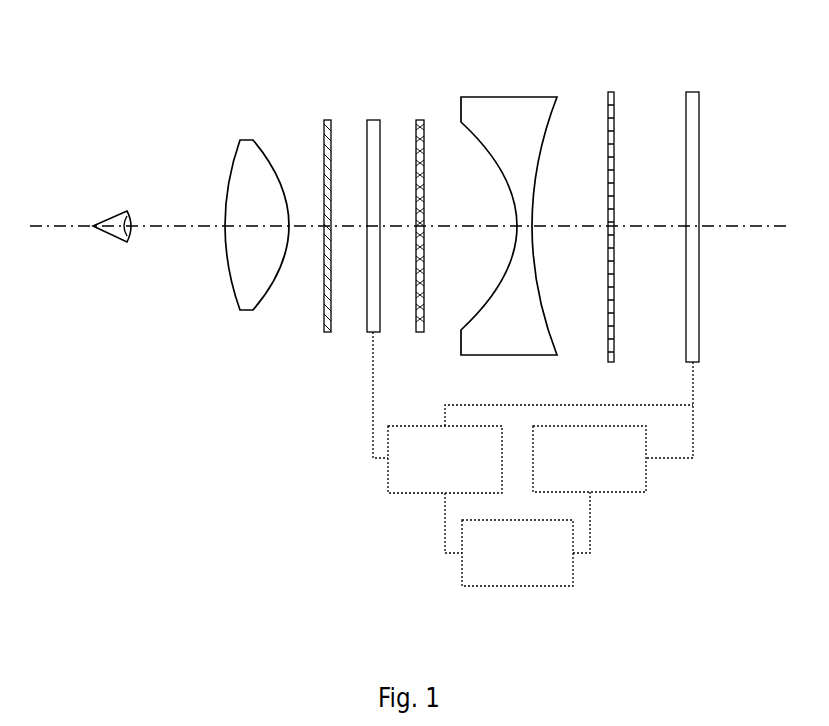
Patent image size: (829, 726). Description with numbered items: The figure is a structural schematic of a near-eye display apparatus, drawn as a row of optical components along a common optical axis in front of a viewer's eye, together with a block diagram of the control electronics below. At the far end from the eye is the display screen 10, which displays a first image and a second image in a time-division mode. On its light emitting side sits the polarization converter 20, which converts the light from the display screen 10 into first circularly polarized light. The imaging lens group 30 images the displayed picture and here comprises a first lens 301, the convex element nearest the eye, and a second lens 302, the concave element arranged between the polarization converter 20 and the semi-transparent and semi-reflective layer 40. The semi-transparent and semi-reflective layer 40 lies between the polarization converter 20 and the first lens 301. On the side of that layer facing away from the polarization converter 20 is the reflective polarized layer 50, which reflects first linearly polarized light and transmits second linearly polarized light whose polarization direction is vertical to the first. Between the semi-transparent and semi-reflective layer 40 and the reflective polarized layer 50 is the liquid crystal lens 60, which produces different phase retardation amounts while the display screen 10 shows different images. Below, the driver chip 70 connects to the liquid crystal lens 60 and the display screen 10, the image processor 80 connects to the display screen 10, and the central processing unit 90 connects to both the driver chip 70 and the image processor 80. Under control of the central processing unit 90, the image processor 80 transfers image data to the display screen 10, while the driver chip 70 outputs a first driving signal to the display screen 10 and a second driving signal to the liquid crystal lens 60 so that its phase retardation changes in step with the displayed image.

The display screen 10 is at (693, 92).
The polarization converter 20 is at (611, 92).
The imaging lens group 30 is at (399, 197).
The first lens 301 is at (247, 140).
The second lens 302 is at (508, 97).
The semi-transparent and semi-reflective layer 40 is at (420, 120).
The reflective polarized layer 50 is at (327, 120).
The liquid crystal lens 60 is at (373, 120).
The driver chip 70 is at (388, 493).
The image processor 80 is at (646, 492).
The central processing unit 90 is at (517, 586).